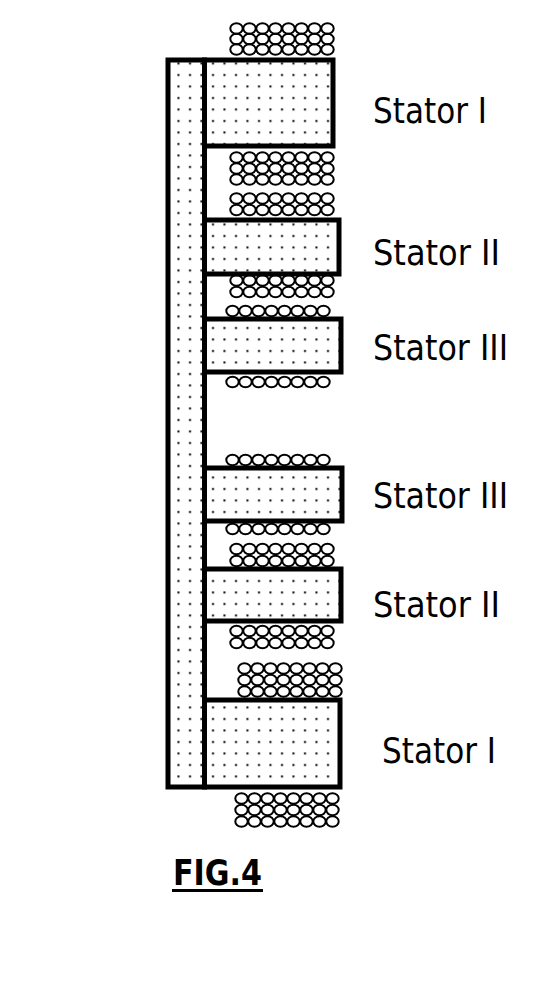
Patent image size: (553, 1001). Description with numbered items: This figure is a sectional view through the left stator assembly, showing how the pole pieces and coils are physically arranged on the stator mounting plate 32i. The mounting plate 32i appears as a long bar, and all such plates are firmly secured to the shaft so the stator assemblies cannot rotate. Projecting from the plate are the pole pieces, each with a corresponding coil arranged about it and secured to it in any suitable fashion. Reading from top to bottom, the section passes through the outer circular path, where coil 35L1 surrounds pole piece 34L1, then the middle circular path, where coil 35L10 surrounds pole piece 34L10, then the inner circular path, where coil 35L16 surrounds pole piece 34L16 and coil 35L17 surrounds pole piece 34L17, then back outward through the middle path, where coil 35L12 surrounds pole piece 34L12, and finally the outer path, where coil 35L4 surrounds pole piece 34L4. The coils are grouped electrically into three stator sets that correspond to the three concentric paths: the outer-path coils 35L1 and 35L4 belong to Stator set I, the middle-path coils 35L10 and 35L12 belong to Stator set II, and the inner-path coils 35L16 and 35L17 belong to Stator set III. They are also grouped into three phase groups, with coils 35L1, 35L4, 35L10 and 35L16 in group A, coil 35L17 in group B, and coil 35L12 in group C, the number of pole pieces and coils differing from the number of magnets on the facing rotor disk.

The stator mounting plate 32i is at (178, 417).
The pole piece 34L1 is at (220, 103).
The coil 35L1 is at (238, 28).
The coil 35L10 is at (222, 202).
The pole piece 34L10 is at (247, 250).
The pole piece 34L16 is at (222, 313).
The coil 35L16 is at (245, 342).
The pole piece 34L17 is at (225, 458).
The coil 35L17 is at (247, 490).
The coil 35L12 is at (220, 553).
The pole piece 34L12 is at (243, 603).
The coil 35L4 is at (242, 680).
The pole piece 34L4 is at (232, 743).